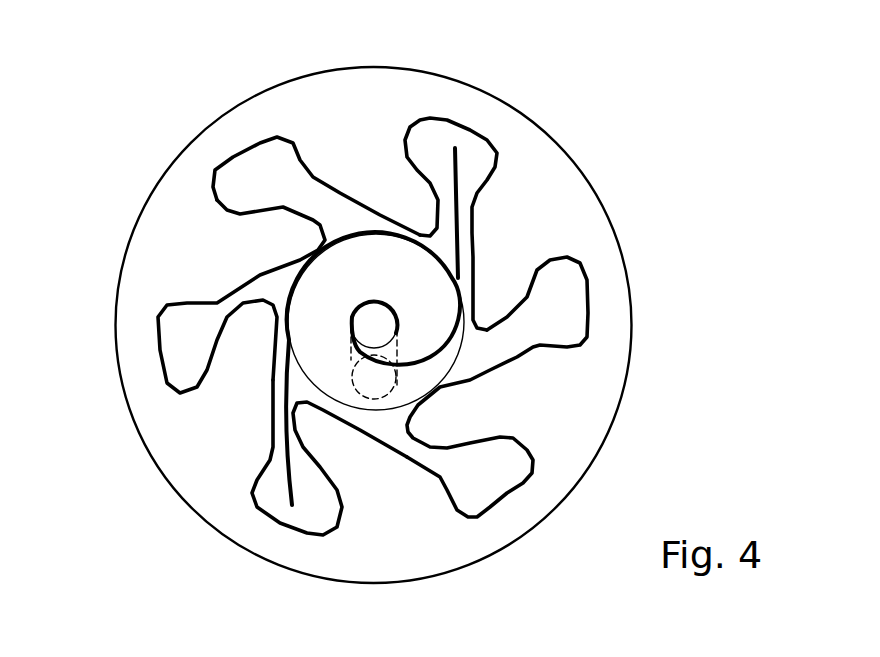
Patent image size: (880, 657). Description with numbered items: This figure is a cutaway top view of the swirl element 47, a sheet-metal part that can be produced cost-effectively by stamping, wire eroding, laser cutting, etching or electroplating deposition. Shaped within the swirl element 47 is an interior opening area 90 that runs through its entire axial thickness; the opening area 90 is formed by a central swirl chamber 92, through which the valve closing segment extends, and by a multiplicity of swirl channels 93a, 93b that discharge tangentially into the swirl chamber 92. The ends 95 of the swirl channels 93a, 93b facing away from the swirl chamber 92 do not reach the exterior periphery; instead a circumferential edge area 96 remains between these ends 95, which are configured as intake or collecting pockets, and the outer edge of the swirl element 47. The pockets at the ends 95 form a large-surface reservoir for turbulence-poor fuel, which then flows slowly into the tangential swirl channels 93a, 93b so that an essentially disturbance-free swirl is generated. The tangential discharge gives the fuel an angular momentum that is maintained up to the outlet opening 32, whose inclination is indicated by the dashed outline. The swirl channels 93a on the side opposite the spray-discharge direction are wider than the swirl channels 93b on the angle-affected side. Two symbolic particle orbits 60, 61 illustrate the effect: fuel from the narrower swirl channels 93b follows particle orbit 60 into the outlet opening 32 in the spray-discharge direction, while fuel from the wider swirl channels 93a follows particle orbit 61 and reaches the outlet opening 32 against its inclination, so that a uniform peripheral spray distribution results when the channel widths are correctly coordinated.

The swirl element 47 is at (598, 157).
The circumferential edge area 96 is at (238, 132).
The swirl channels 93a is at (447, 223).
The swirl channels 93b is at (318, 432).
The ends of swirl channels 95 is at (567, 308).
The swirl chamber 92 is at (298, 266).
The particle orbit 60 is at (285, 487).
The particle orbit 61 is at (458, 281).
The opening area 90 is at (435, 283).
The outlet opening 32 is at (350, 346).